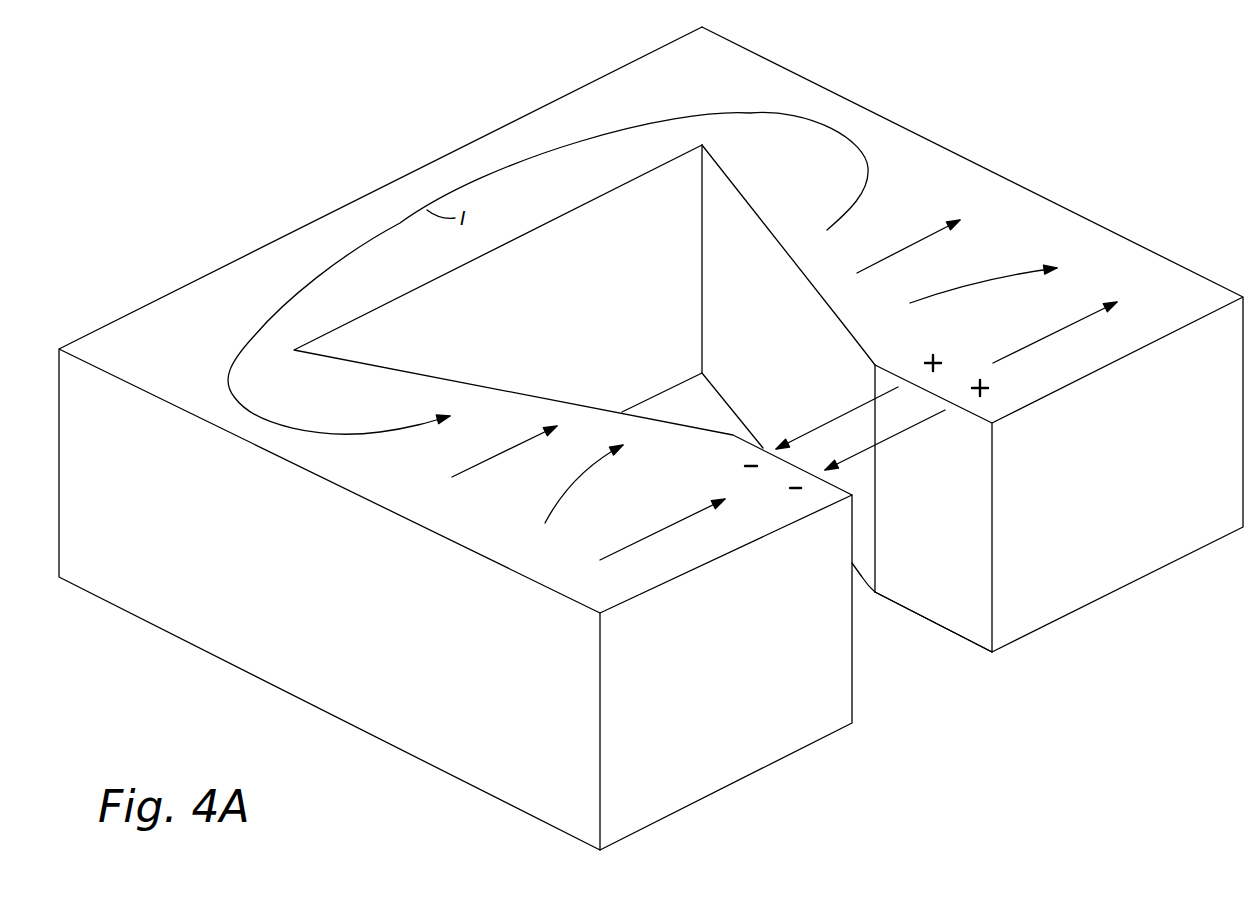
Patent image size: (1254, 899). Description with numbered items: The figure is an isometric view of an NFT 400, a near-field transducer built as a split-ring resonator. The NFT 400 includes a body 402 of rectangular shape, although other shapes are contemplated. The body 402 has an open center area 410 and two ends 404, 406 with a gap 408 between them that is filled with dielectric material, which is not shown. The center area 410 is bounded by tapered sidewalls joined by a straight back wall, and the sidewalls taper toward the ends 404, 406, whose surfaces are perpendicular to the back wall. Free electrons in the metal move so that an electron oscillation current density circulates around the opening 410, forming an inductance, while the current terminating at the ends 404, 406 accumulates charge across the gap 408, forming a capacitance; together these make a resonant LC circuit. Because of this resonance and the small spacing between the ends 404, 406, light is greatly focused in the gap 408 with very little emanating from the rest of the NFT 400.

The NFT 400 is at (405, 128).
The body 402 is at (1010, 183).
The end 404 is at (853, 693).
The end 406 is at (963, 628).
The gap 408 is at (927, 663).
The open center area 410 is at (712, 416).